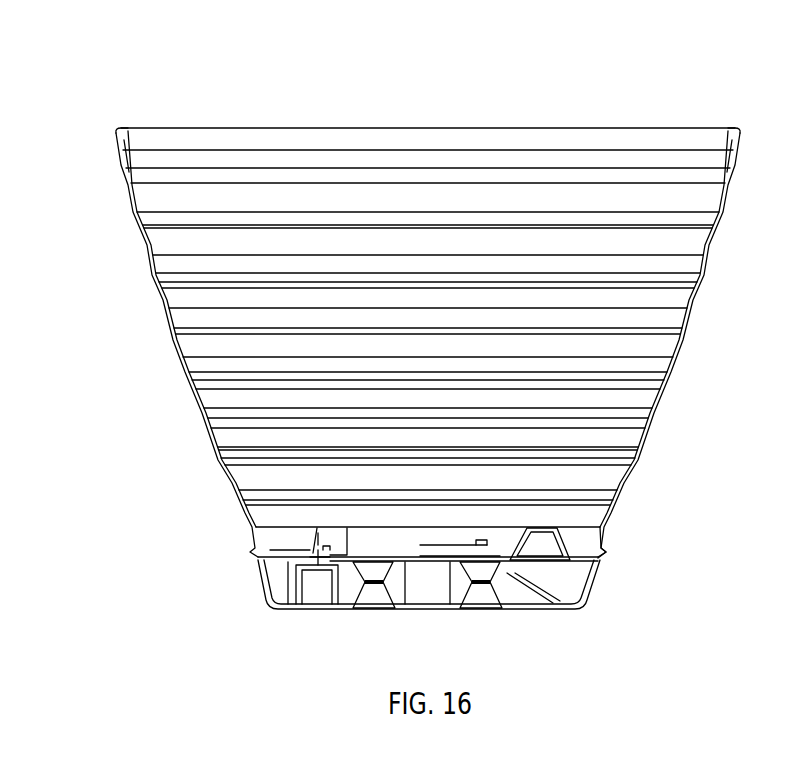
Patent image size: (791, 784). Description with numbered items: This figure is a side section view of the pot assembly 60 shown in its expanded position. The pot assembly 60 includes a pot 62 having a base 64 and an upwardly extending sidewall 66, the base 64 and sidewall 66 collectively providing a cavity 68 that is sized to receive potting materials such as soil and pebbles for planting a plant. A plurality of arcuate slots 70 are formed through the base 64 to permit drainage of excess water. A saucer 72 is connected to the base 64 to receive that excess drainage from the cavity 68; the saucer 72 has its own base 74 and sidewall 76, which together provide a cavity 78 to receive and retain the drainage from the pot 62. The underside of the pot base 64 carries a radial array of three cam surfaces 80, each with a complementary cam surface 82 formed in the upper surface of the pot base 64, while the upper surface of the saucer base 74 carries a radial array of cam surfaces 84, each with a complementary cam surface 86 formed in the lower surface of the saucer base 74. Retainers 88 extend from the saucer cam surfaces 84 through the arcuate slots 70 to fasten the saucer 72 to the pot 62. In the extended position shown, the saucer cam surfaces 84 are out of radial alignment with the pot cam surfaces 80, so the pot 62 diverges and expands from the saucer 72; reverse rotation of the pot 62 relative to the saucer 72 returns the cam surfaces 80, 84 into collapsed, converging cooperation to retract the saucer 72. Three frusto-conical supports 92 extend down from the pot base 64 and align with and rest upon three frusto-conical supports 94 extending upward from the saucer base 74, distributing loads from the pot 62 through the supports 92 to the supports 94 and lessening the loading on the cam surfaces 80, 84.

The pot assembly 60 is at (572, 96).
The pot 62 is at (115, 170).
The base 64 is at (578, 545).
The sidewall 66 is at (184, 368).
The cavity 68 is at (126, 148).
The arcuate slots 70 is at (344, 557).
The saucer 72 is at (612, 564).
The base 74 is at (435, 606).
The sidewall 76 is at (594, 582).
The cavity 78 is at (583, 589).
The cam surfaces 80 is at (298, 556).
The cam surface 82 is at (405, 540).
The cam surfaces 84 is at (262, 551).
The cam surface 86 is at (313, 568).
The retainers 88 is at (316, 542).
The frusto-conical supports 92 is at (360, 575).
The frusto-conical supports 94 is at (370, 593).